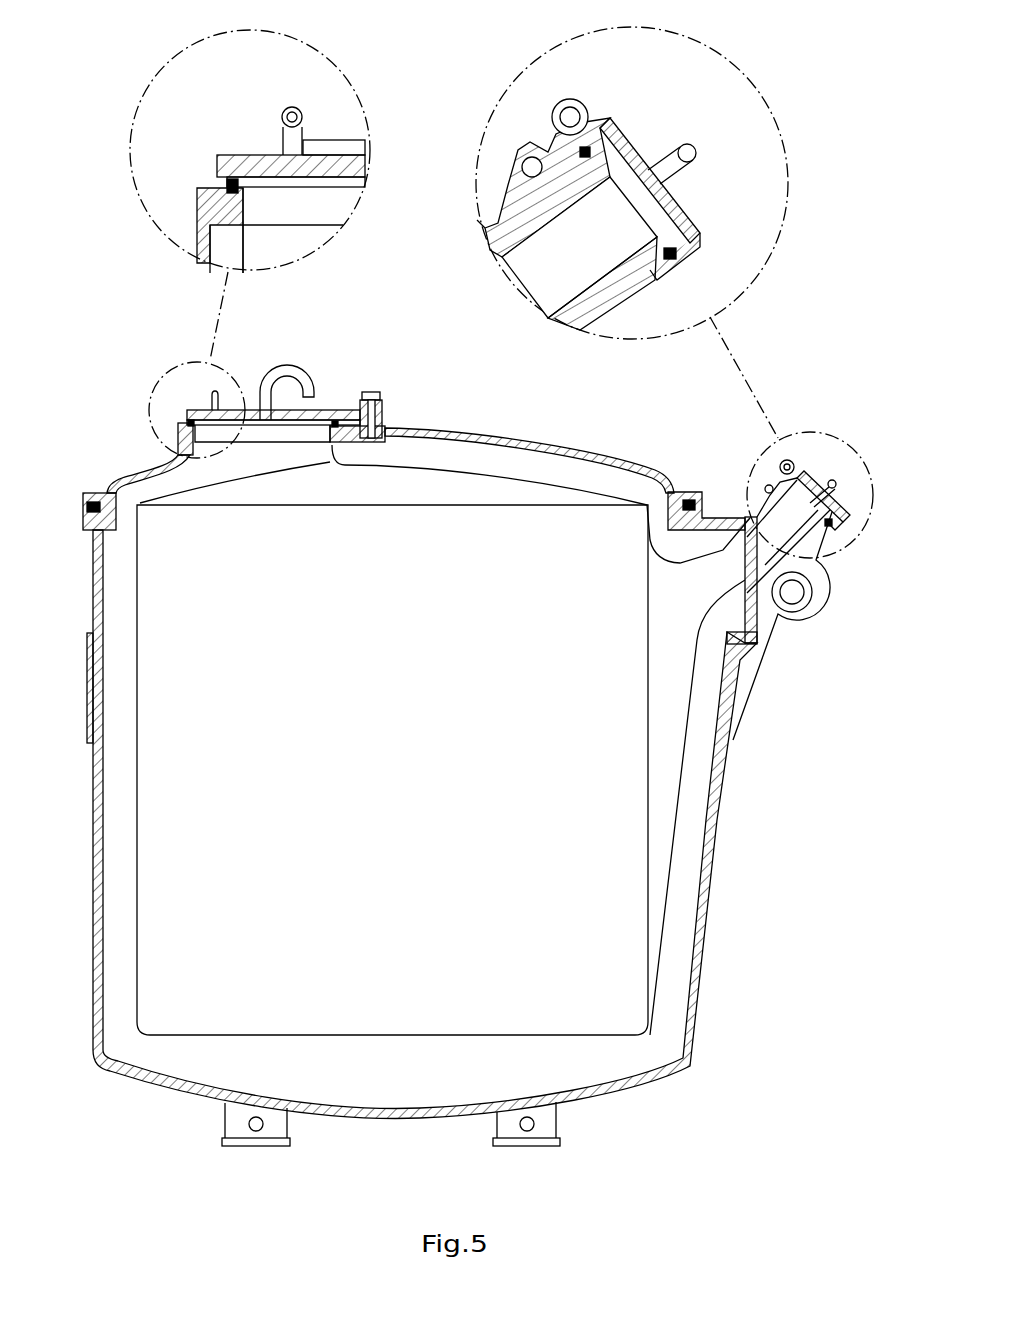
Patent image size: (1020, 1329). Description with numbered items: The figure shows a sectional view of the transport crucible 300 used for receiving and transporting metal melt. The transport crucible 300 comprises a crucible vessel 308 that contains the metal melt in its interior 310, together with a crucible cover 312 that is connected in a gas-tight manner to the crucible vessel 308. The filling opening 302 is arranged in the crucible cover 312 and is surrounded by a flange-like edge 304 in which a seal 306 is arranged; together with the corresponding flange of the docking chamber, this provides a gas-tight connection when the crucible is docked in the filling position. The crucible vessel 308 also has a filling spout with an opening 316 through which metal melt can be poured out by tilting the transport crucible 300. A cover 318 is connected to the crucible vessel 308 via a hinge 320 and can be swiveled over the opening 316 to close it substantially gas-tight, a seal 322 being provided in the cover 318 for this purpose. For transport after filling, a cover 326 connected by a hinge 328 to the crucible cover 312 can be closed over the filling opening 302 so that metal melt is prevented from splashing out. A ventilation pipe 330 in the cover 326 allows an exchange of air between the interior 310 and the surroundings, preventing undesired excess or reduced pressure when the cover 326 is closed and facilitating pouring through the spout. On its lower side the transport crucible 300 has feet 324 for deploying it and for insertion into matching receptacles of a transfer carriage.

The transport crucible 300 is at (752, 870).
The filling opening 302 is at (277, 203).
The flange-like edge 304 is at (223, 183).
The seal 306 is at (228, 183).
The crucible vessel 308 is at (93, 560).
The interior 310 is at (412, 909).
The crucible cover 312 is at (500, 432).
The opening 316 is at (643, 200).
The cover 318 is at (627, 155).
The hinge 320 is at (571, 115).
The seal 322 is at (675, 256).
The feet 324 is at (545, 1125).
The cover 326 is at (320, 410).
The hinge 328 is at (384, 413).
The ventilation pipe 330 is at (288, 365).